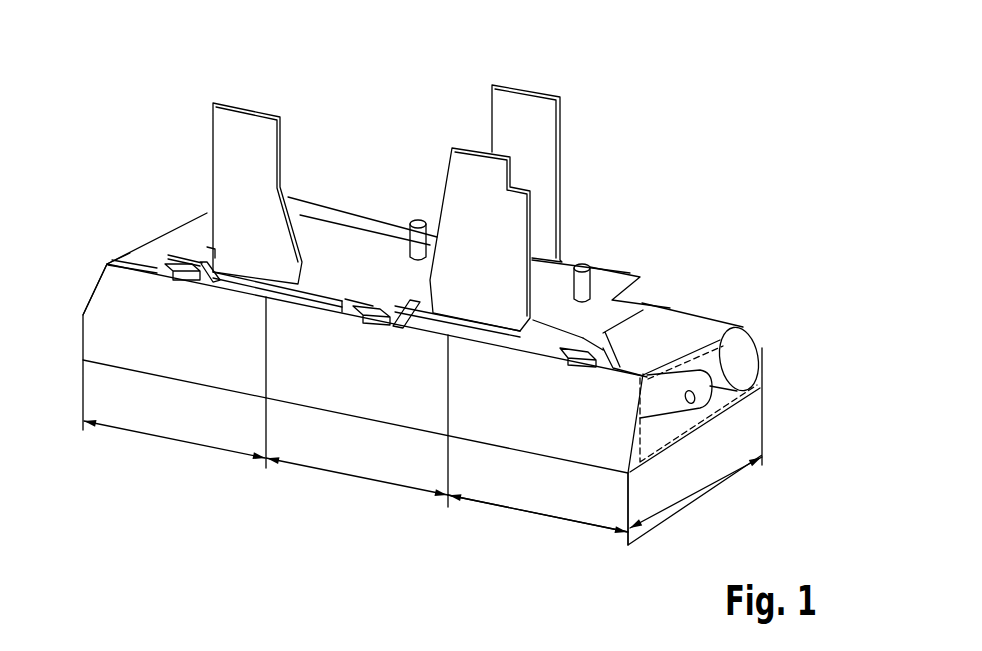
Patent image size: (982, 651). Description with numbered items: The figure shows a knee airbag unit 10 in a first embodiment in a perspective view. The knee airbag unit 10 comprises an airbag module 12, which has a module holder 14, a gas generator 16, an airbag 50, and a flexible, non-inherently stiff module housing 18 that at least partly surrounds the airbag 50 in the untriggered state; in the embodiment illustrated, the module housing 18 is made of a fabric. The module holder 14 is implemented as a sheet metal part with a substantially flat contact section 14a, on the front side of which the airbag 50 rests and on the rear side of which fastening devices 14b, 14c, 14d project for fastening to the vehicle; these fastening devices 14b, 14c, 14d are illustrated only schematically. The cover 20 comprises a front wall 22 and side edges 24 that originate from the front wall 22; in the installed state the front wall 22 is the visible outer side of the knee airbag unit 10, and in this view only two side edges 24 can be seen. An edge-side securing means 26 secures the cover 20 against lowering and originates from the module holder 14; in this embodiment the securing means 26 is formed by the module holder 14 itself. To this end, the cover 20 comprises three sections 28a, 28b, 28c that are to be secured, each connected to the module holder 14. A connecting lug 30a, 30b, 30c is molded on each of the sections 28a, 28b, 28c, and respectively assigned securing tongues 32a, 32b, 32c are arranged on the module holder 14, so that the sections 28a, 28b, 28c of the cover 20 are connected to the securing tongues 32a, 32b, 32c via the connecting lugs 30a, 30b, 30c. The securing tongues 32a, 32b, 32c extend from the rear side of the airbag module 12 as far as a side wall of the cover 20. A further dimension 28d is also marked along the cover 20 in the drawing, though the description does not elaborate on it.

The knee airbag unit 10 is at (623, 72).
The airbag module 12 is at (682, 170).
The module holder 14 is at (317, 203).
The contact section 14a is at (340, 230).
The fastening device 14b is at (243, 125).
The fastening device 14c is at (475, 165).
The fastening device 14d is at (523, 112).
The gas generator 16 is at (747, 360).
The module housing 18 is at (202, 225).
The cover 20 is at (210, 348).
The front wall 22 is at (422, 432).
The side edge 24 is at (483, 445).
The securing means 26 is at (115, 240).
The section to be secured 28a is at (138, 432).
The section to be secured 28b is at (318, 472).
The section to be secured 28c is at (543, 520).
The end section length 28d is at (662, 515).
The connecting lug 30a is at (170, 260).
The connecting lug 30b is at (367, 308).
The connecting lug 30c is at (615, 355).
The securing tongue 32a is at (178, 278).
The securing tongue 32b is at (375, 313).
The securing tongue 32c is at (572, 343).
The airbag 50 is at (705, 335).